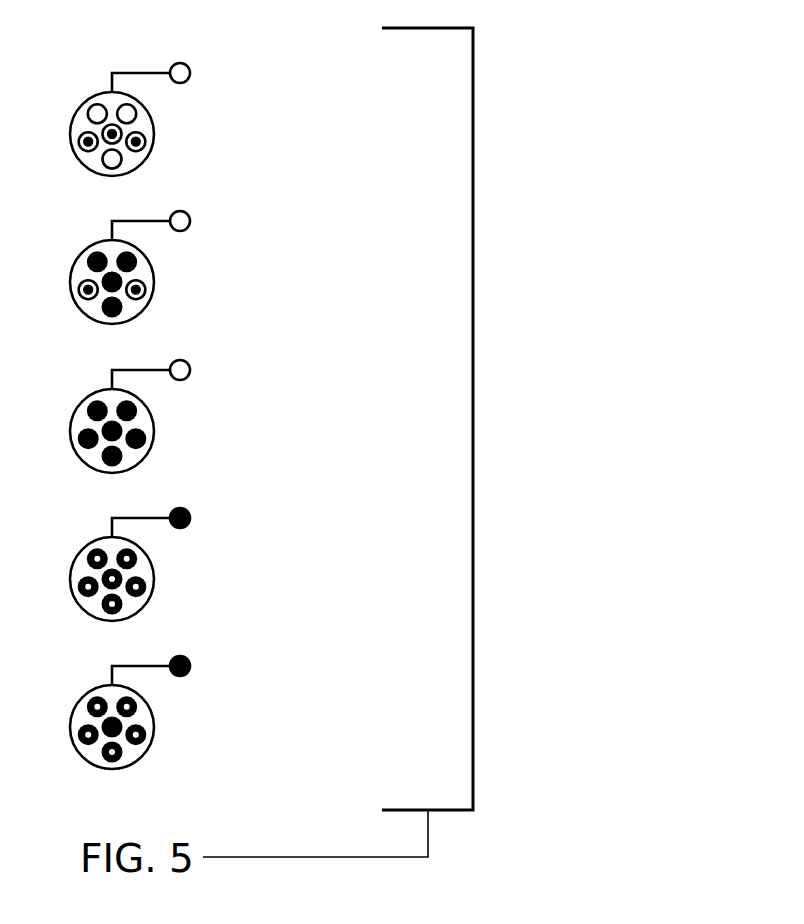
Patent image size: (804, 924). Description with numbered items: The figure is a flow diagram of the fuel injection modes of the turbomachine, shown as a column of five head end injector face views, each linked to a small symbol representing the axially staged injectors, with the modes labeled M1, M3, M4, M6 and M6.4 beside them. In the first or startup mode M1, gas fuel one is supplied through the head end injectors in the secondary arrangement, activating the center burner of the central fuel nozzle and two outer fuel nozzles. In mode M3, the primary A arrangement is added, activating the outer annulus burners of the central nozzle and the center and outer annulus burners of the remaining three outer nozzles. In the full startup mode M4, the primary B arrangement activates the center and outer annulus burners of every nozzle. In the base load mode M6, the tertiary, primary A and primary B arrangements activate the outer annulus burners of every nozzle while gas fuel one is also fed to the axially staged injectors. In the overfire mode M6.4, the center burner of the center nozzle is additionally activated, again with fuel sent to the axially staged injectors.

The M1 mode M1 is at (180, 119).
The M3 mode M3 is at (180, 267).
The M4 mode M4 is at (180, 416).
The M6 mode M6 is at (180, 564).
The M6.4 mode M6.4 is at (191, 712).